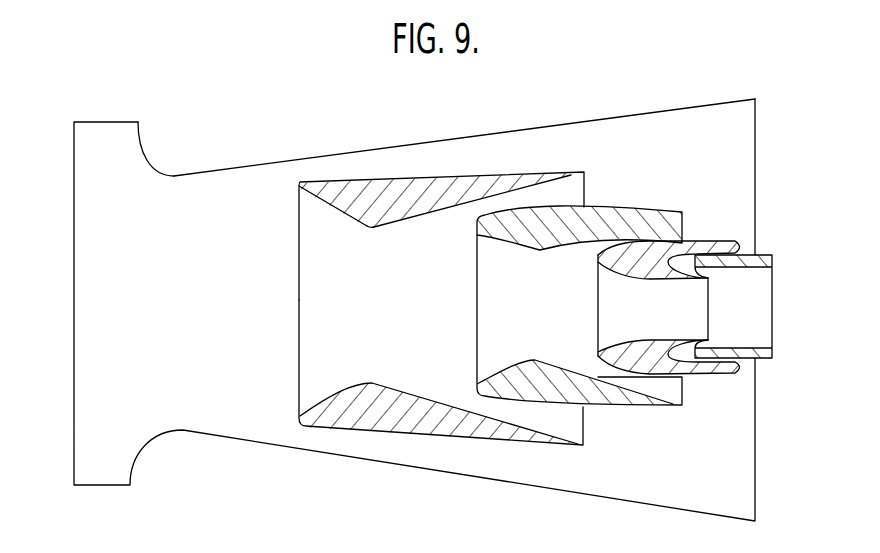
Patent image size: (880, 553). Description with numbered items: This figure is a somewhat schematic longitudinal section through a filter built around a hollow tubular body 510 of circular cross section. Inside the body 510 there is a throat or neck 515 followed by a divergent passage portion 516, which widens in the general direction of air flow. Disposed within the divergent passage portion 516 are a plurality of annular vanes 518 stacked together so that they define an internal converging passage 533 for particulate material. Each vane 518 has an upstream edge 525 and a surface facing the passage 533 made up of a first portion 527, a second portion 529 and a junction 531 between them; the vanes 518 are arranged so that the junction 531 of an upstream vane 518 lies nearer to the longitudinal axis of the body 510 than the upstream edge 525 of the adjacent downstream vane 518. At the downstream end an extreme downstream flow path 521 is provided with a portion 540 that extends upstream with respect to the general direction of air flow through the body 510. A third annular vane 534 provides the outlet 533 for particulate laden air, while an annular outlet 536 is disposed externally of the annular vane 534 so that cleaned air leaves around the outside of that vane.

The hollow tubular body 510 is at (253, 166).
The throat or neck 515 is at (170, 178).
The divergent passage portion 516 is at (528, 138).
The annular vane 518 is at (388, 190).
The extreme downstream flow path 521 is at (742, 250).
The upstream edge 525 is at (302, 190).
The first portion 527 is at (336, 214).
The second portion 529 is at (442, 204).
The junction 531 is at (376, 229).
The converging passage 533 is at (308, 342).
The third annular vane 534 is at (748, 361).
The annular outlet 536 is at (722, 130).
The portion 540 is at (704, 269).